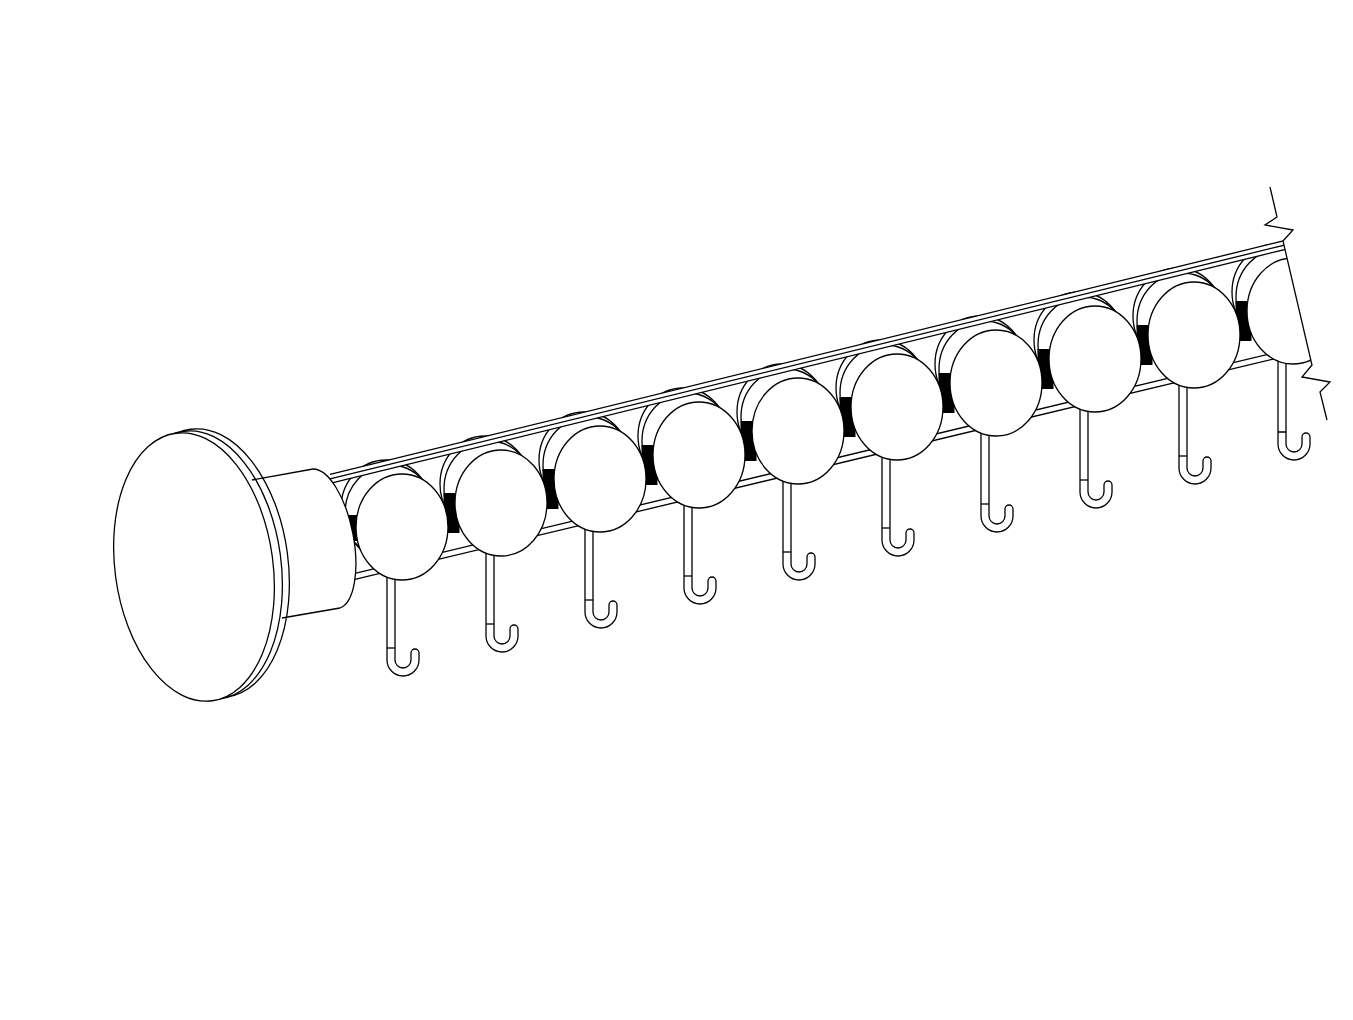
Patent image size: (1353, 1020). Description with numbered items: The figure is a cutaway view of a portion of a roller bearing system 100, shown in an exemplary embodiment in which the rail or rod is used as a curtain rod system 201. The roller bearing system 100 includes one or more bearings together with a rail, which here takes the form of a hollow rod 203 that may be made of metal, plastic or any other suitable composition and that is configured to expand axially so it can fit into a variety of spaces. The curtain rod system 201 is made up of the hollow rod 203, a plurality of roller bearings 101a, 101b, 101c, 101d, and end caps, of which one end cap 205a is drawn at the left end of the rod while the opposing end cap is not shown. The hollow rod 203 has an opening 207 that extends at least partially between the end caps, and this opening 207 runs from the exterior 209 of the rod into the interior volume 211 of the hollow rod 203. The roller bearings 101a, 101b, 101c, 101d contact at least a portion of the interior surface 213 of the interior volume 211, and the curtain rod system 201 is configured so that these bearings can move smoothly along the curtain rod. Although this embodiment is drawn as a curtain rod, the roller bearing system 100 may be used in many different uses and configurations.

The roller bearing system 100 is at (320, 165).
The curtain rod system 201 is at (594, 283).
The hollow rod 203 is at (358, 466).
The end cap 205a is at (215, 440).
The opening 207 is at (446, 561).
The exterior 209 is at (558, 424).
The interior volume 211 is at (436, 468).
The interior surface 213 is at (550, 523).
The roller bearing 101a is at (401, 503).
The roller bearing 101b is at (494, 482).
The roller bearing 101c is at (597, 453).
The roller bearing 101d is at (700, 428).